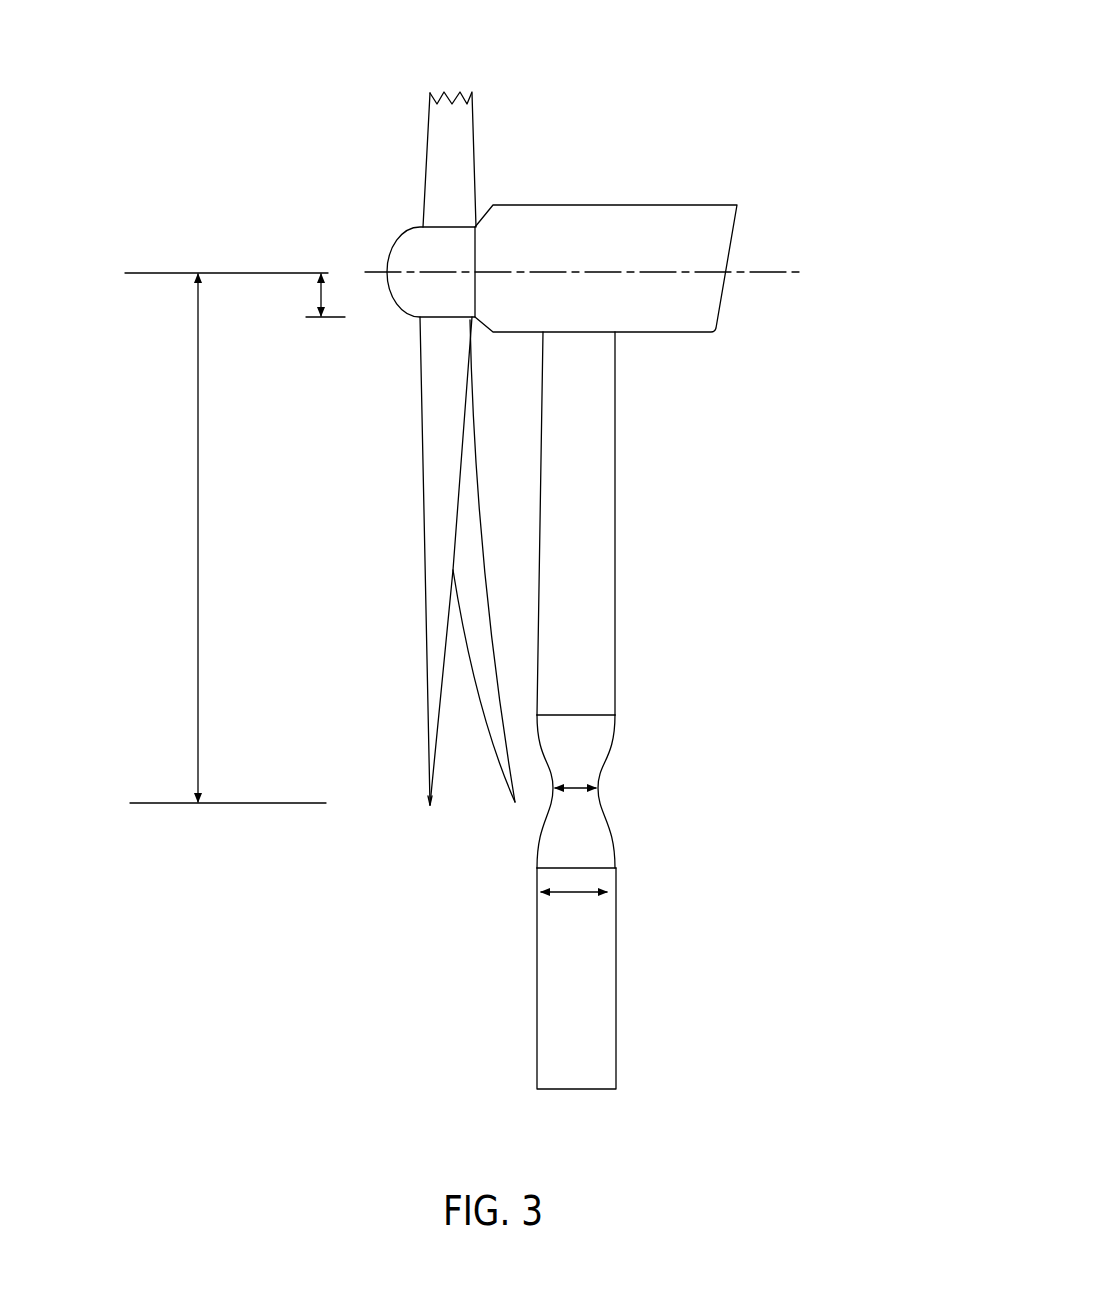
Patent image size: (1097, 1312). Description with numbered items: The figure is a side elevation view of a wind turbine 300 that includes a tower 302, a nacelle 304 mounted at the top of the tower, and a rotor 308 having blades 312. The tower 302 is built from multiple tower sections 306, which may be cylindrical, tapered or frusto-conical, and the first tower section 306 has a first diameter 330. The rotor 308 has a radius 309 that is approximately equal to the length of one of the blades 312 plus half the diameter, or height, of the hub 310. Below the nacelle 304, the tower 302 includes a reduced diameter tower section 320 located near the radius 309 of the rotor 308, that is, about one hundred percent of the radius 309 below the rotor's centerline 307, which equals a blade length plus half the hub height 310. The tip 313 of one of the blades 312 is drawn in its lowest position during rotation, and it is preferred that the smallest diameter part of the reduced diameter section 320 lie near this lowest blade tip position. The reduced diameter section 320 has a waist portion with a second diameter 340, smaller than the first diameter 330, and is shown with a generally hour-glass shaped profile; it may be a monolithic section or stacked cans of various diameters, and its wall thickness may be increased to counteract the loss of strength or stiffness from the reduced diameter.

The wind turbine 300 is at (707, 48).
The tower 302 is at (697, 499).
The nacelle 304 is at (635, 205).
The tower sections 306 is at (616, 563).
The rotor centerline 307 is at (768, 270).
The rotor 308 is at (257, 179).
The radius 309 is at (197, 538).
The hub 310 is at (317, 298).
The blades 312 is at (427, 160).
The tip 313 is at (430, 808).
The reduced diameter tower section 320 is at (598, 788).
The first diameter 330 is at (565, 893).
The second diameter 340 is at (576, 778).